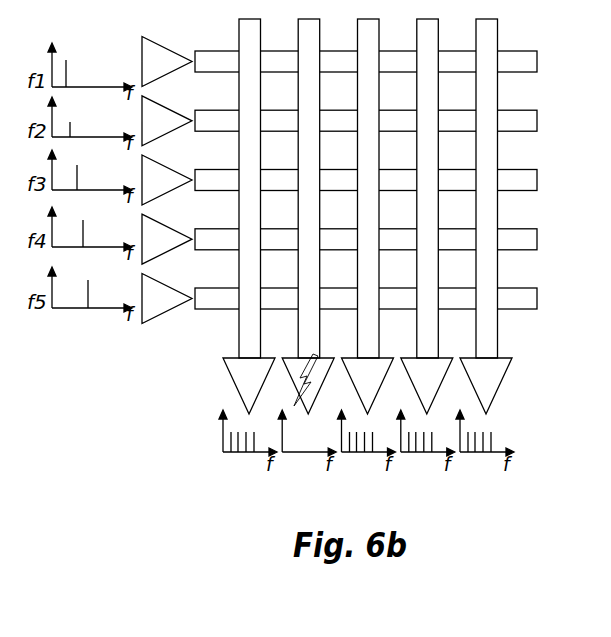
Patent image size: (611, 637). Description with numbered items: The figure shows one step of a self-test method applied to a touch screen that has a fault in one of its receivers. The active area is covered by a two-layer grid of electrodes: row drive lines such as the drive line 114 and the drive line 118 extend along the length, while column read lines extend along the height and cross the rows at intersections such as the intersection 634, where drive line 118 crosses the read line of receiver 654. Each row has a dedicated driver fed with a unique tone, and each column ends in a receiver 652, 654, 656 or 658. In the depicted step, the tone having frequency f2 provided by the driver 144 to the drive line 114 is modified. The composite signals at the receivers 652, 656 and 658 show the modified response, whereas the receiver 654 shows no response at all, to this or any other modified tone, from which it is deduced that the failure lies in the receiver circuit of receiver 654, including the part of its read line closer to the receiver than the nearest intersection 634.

The driver 144 is at (140, 116).
The drive line 114 is at (538, 120).
The drive line 118 is at (538, 298).
The intersection 634 is at (308, 240).
The receiver 652 is at (234, 376).
The receiver 654 is at (298, 358).
The receiver 656 is at (387, 358).
The receiver 658 is at (500, 380).